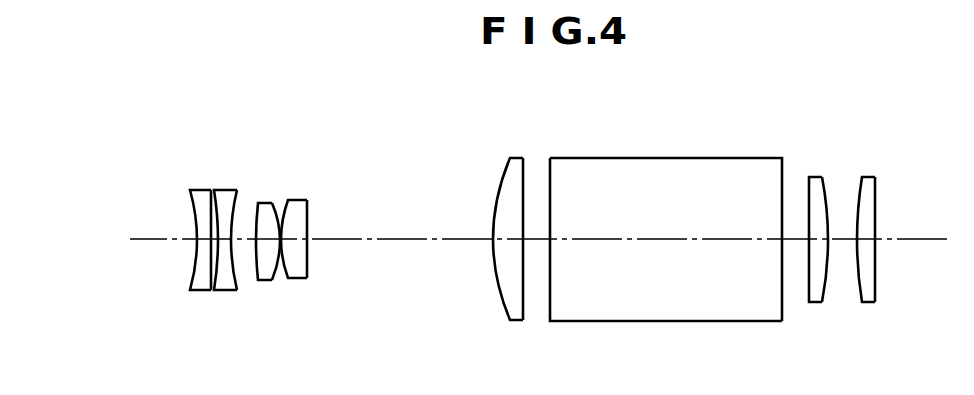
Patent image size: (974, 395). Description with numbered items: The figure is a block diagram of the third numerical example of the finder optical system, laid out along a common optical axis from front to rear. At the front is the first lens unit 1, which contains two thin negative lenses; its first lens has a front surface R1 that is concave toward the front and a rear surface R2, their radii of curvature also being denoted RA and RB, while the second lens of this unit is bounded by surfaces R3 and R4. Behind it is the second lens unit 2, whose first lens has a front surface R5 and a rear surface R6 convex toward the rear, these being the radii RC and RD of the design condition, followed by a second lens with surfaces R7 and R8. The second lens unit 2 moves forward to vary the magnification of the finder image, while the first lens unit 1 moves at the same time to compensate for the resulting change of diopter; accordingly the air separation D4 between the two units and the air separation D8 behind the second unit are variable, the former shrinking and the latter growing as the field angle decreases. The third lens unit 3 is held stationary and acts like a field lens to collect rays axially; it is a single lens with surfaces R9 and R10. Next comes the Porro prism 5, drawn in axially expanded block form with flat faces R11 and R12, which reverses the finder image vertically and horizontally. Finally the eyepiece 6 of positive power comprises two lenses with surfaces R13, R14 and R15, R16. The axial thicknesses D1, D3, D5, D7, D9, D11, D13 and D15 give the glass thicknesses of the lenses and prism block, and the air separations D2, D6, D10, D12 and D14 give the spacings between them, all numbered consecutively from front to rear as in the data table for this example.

The first lens unit 1 is at (258, 114).
The second lens unit 2 is at (378, 114).
The third lens unit 3 is at (532, 116).
The Porro prism 5 is at (794, 116).
The eyepiece 6 is at (919, 116).
The first lens surface R1 is at (174, 205).
The second lens surface R2 is at (190, 205).
The third lens surface R3 is at (217, 242).
The fourth lens surface R4 is at (239, 190).
The fifth lens surface R5 is at (276, 200).
The sixth lens surface R6 is at (301, 200).
The seventh lens surface R7 is at (289, 200).
The eighth lens surface R8 is at (308, 200).
The ninth lens surface R9 is at (502, 203).
The tenth lens surface R10 is at (524, 198).
The eleventh surface R11 is at (550, 185).
The twelfth surface R12 is at (782, 185).
The thirteenth surface R13 is at (809, 191).
The fourteenth surface R14 is at (824, 196).
The fifteenth surface R15 is at (861, 193).
The sixteenth surface R16 is at (876, 193).
The front surface radius of curvature of first lens of first unit RA is at (193, 204).
The rear surface radius of curvature of first lens of first unit RB is at (210, 190).
The front surface radius of curvature of first lens of second unit RC is at (258, 203).
The rear surface radius of curvature of first lens of second unit RD is at (273, 203).
The first axial thickness D1 is at (204, 243).
The second air separation D2 is at (217, 243).
The third axial thickness D3 is at (228, 243).
The fourth air separation D4 is at (246, 242).
The fifth axial thickness D5 is at (265, 282).
The sixth air separation D6 is at (281, 242).
The seventh axial thickness D7 is at (298, 280).
The eighth air separation D8 is at (392, 242).
The ninth axial thickness D9 is at (510, 243).
The tenth air separation D10 is at (540, 242).
The eleventh axial thickness D11 is at (667, 242).
The twelfth air separation D12 is at (797, 242).
The thirteenth axial thickness D13 is at (813, 243).
The fourteenth air separation D14 is at (843, 242).
The fifteenth axial thickness D15 is at (867, 242).